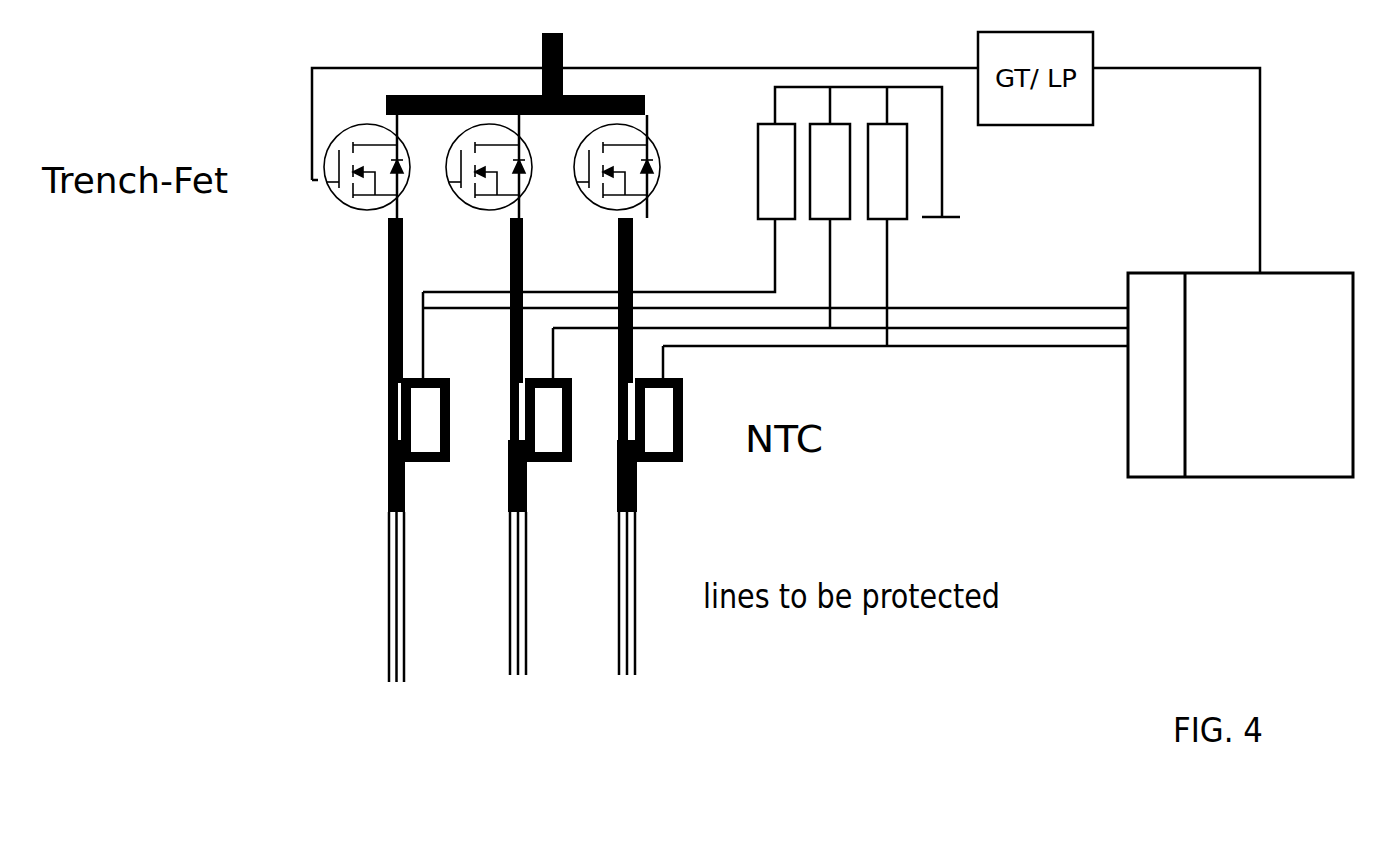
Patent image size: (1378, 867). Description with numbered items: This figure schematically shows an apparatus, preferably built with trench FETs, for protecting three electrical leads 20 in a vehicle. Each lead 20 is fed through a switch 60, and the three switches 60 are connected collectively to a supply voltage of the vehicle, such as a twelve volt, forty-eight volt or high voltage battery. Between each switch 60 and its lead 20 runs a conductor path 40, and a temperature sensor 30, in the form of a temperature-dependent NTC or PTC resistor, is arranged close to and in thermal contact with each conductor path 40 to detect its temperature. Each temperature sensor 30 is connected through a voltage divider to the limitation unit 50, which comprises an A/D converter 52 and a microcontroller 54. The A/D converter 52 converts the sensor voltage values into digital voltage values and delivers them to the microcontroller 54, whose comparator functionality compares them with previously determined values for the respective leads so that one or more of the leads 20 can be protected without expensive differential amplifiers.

The electrical lead 20 is at (410, 670).
The temperature sensor 30 is at (427, 463).
The conductor path 40 is at (388, 342).
The limitation unit 50 is at (1240, 374).
The A/D converter 52 is at (1150, 479).
The microcontroller 54 is at (1250, 479).
The switch 60 is at (340, 196).